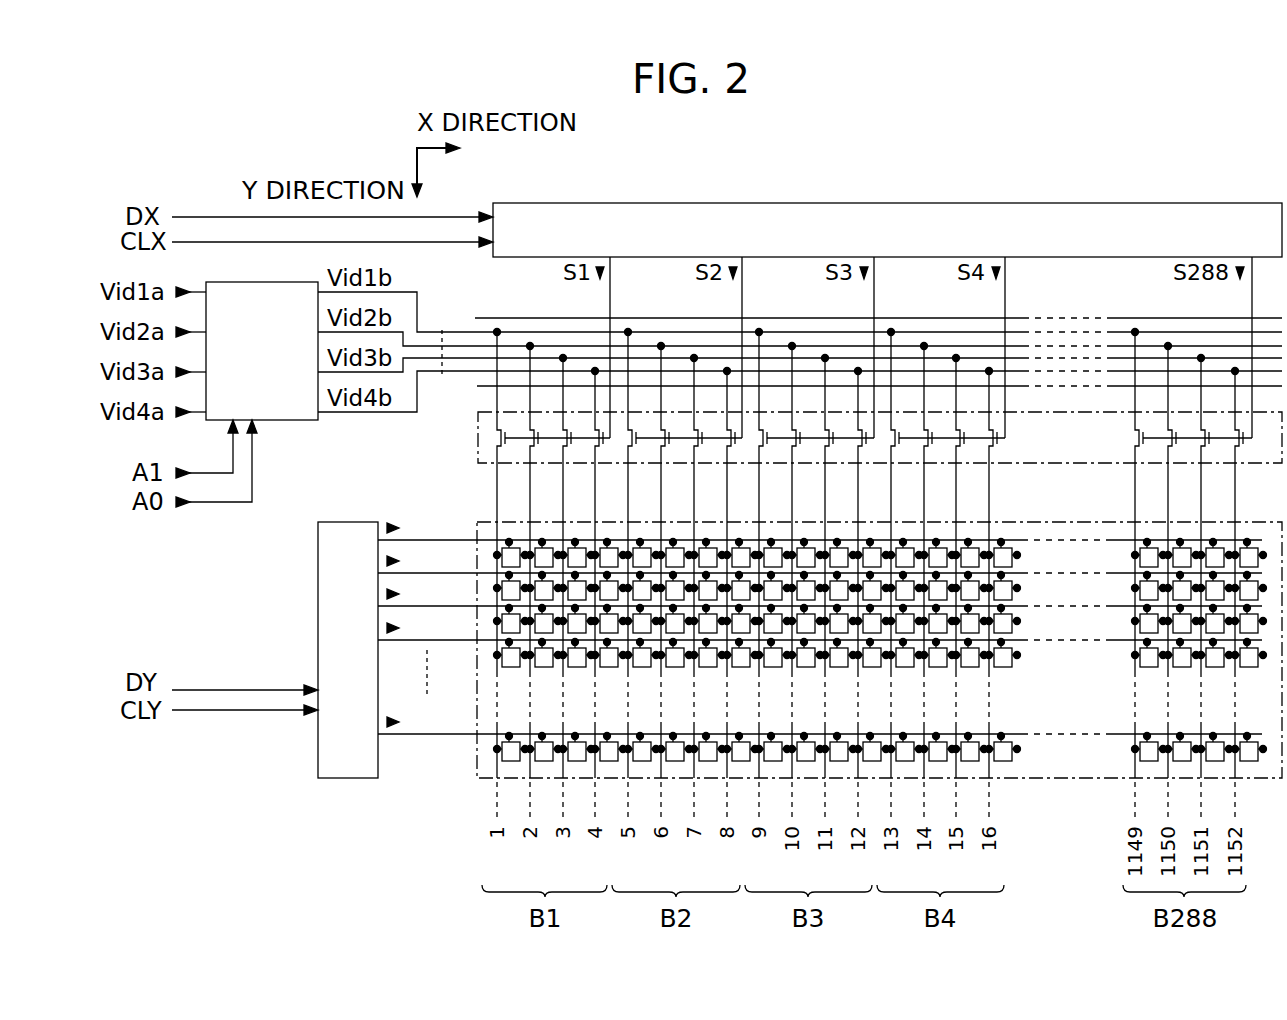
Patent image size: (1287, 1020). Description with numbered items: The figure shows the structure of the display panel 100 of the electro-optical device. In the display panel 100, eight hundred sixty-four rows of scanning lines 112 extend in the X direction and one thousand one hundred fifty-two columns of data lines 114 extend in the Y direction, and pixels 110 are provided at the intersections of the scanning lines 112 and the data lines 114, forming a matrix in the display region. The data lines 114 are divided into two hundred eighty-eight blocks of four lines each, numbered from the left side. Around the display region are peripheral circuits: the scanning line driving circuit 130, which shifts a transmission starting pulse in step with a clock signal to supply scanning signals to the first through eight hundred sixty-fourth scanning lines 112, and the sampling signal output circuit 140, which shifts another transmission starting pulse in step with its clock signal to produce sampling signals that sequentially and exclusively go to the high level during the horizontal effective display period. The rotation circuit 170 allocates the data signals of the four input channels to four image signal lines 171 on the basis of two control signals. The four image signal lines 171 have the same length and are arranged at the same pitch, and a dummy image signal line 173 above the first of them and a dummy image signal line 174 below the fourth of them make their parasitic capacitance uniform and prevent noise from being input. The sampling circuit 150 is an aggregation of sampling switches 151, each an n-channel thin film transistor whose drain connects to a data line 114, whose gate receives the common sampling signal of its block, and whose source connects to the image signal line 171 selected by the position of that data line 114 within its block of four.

The display panel 100 is at (302, 128).
The sampling signal output circuit 140 is at (675, 204).
The rotation circuit 170 is at (273, 421).
The scanning line driving circuit 130 is at (318, 576).
The sampling circuit 150 is at (477, 446).
The sampling switch 151 is at (1131, 438).
The image signal line 171 is at (441, 328).
The dummy image signal line 173 is at (560, 317).
The dummy image signal line 174 is at (486, 386).
The data line 114 is at (990, 487).
The scanning line 112 is at (1003, 555).
The pixel 110 is at (1000, 668).